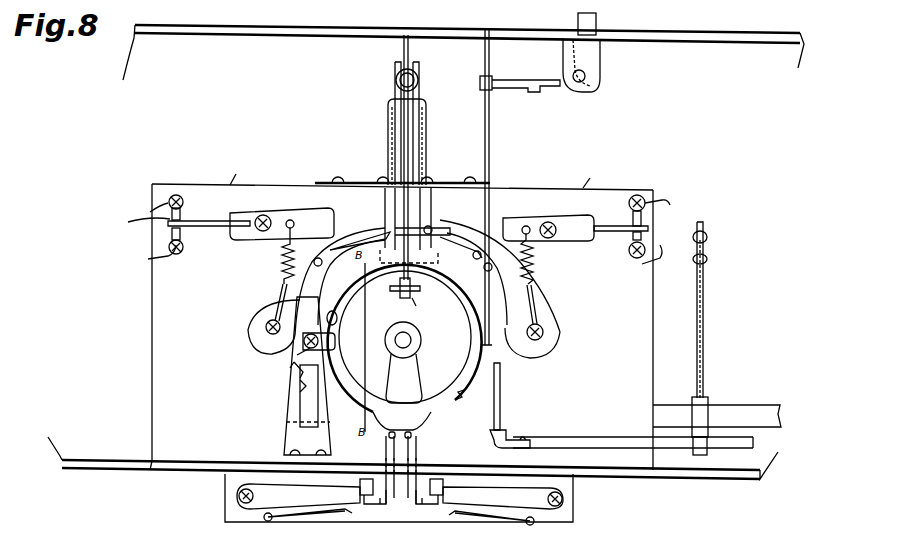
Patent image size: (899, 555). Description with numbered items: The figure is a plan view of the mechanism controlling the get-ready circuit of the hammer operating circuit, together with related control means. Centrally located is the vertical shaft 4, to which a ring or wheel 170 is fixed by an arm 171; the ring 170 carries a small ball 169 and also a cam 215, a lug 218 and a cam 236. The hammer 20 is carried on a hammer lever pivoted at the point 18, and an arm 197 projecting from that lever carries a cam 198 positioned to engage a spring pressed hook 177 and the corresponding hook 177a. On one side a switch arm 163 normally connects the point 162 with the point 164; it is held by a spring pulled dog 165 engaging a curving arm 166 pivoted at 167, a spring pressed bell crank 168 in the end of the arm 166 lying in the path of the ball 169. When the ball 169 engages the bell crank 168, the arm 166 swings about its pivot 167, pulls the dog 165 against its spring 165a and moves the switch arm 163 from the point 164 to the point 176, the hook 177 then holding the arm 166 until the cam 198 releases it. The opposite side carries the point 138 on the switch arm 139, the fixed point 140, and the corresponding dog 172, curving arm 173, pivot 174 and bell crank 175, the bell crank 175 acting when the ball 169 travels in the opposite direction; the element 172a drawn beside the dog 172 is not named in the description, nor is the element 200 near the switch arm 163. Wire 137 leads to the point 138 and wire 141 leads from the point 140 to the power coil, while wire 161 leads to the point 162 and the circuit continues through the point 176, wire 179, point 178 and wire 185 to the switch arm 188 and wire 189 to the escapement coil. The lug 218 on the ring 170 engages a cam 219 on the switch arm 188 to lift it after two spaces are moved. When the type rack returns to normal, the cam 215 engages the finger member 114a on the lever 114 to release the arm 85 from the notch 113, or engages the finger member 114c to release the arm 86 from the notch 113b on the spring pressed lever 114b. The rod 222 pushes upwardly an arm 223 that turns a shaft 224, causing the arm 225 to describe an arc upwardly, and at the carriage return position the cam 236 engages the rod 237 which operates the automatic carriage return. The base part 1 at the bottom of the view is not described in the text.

The base plate 1 is at (150, 472).
The vertical shaft 4 is at (398, 341).
The pivot point 18 is at (422, 310).
The hammer 20 is at (402, 300).
The arm 85 is at (360, 487).
The arm 86 is at (443, 487).
The notch 113 is at (372, 506).
The notch 113b is at (428, 506).
The lever 114 is at (300, 500).
The finger member 114a is at (383, 457).
The spring pressed lever 114b is at (478, 500).
The finger member 114c is at (418, 458).
The wire 137 is at (244, 172).
The point 138 is at (136, 228).
The switch arm 139 is at (230, 232).
The fixed point 140 is at (180, 214).
The wire 141 is at (150, 204).
The wire 161 is at (598, 176).
The point 162 is at (641, 237).
The switch arm 163 is at (590, 232).
The point 164 is at (655, 220).
The spring pulled dog 165 is at (506, 228).
The spring 165a is at (534, 268).
The curving arm 166 is at (446, 228).
The pivot 167 is at (548, 344).
The spring pressed bell crank 168 is at (432, 248).
The ball 169 is at (424, 222).
The ring 170 is at (433, 276).
The arm 171 is at (407, 383).
The dog 172 is at (290, 218).
The spring 172a is at (285, 272).
The curving arm 173 is at (318, 246).
The pivot 174 is at (262, 338).
The bell crank 175 is at (383, 268).
The point 176 is at (618, 250).
The spring pressed hook 177 is at (419, 66).
The spring pressed hook 177a is at (396, 66).
The point 178 is at (184, 254).
The wire 179 is at (157, 262).
The wire 185 is at (292, 368).
The switch arm 188 is at (308, 418).
The wire 189 is at (300, 388).
The arm 197 is at (398, 112).
The cam 198 is at (406, 60).
The wire hook 200 is at (668, 200).
The cam 215 is at (418, 432).
The lug 218 is at (337, 322).
The cam 219 is at (330, 352).
The rod 222 is at (708, 228).
The arm 223 is at (705, 370).
The shaft 224 is at (722, 450).
The arm 225 is at (502, 393).
The cam 236 is at (467, 402).
The rod 237 is at (490, 150).